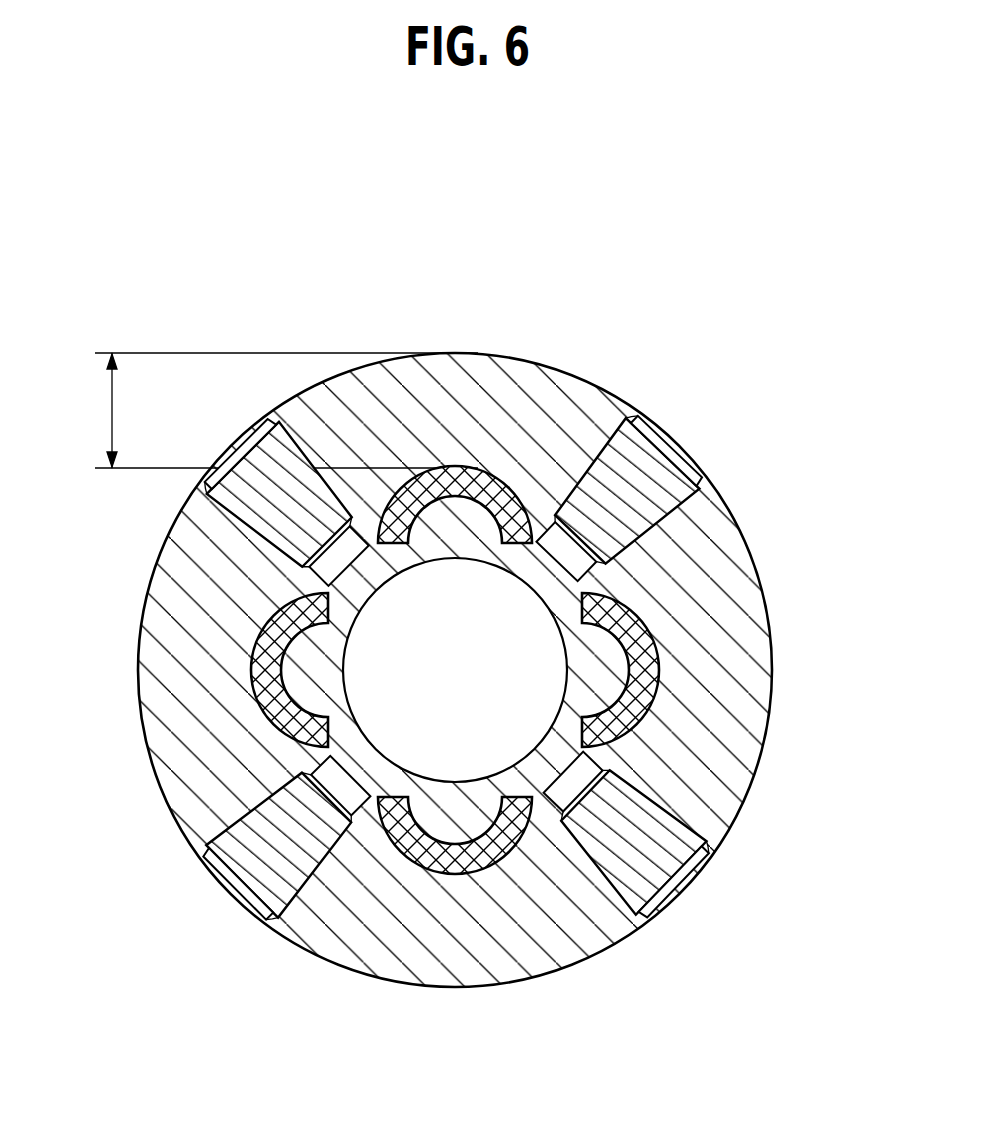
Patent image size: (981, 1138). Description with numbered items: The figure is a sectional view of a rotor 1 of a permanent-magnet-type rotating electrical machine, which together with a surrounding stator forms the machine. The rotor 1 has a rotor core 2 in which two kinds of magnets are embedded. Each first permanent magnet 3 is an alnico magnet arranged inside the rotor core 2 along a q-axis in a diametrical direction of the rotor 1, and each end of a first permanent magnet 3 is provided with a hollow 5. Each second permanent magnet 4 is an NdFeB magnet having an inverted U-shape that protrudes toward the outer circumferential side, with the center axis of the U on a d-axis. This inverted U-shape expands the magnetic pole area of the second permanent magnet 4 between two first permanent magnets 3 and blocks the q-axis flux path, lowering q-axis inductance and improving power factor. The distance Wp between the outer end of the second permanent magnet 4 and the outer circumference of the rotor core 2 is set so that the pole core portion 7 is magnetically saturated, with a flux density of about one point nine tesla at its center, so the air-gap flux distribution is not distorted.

The rotor 1 is at (130, 641).
The rotor core 2 is at (165, 742).
The first permanent magnet 3 is at (614, 421).
The second permanent magnet 4 is at (499, 470).
The hollow 5 is at (679, 443).
The pole core portion 7 is at (406, 384).